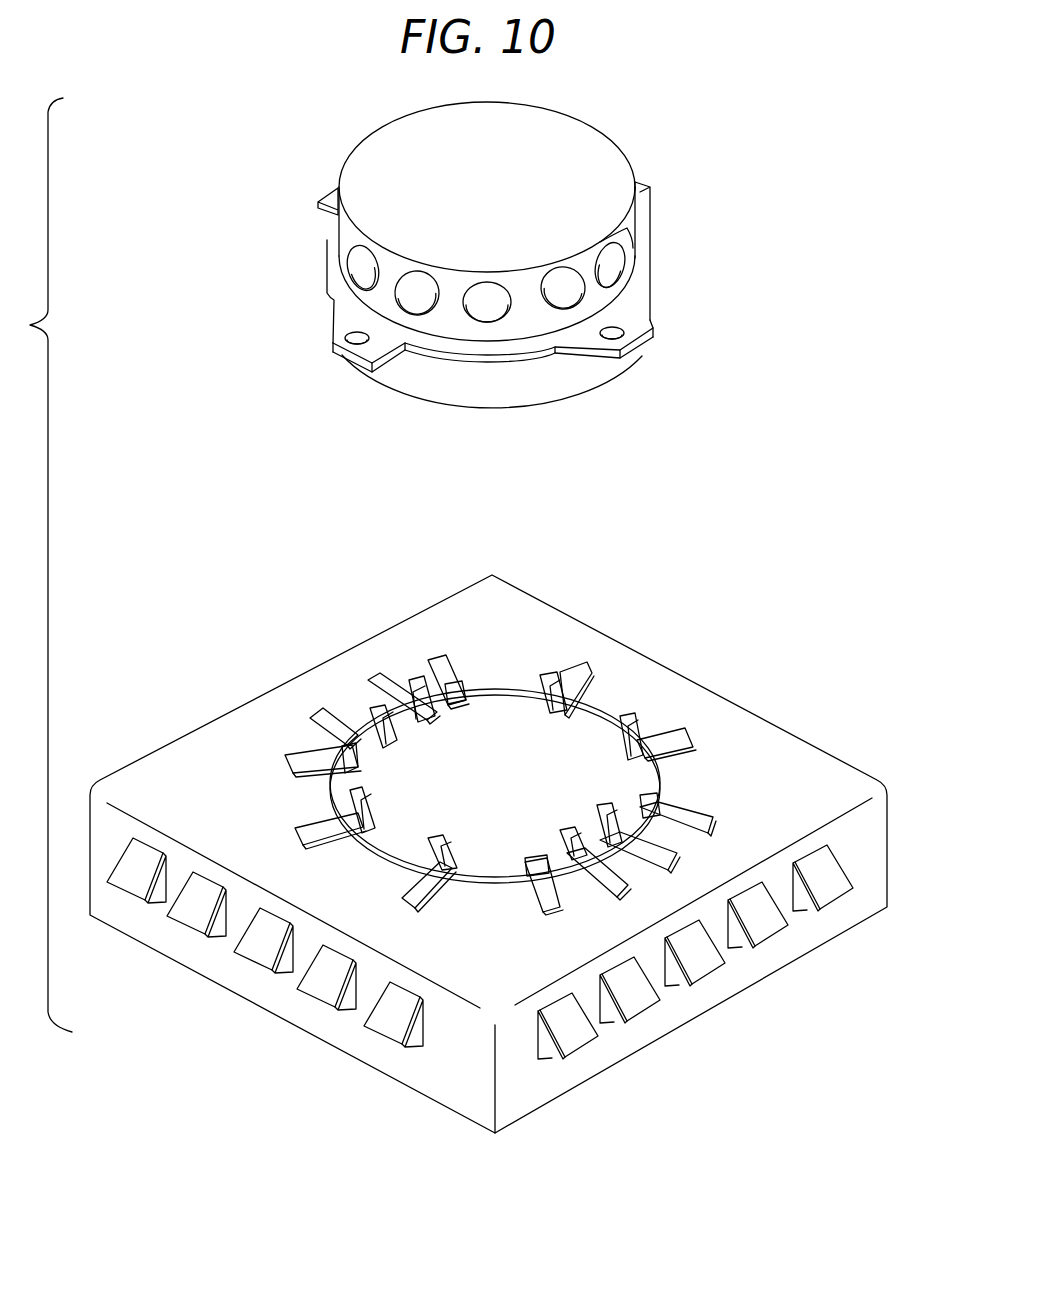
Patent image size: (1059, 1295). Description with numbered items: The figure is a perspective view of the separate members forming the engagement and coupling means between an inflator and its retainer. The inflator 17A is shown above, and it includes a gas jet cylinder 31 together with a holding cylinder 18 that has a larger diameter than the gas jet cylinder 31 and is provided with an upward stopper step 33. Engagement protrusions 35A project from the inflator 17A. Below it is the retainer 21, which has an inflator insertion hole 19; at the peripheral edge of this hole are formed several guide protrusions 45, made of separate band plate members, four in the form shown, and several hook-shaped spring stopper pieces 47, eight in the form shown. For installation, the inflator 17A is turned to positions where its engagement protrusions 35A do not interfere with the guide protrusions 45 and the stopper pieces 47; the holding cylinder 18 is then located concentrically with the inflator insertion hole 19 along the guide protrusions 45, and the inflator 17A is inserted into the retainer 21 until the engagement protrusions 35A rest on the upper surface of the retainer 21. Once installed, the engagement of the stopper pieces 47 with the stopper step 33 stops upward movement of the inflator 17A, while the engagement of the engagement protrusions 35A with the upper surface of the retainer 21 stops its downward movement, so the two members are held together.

The inflator 17A is at (601, 131).
The gas jet cylinder 31 is at (637, 169).
The stopper step 33 is at (635, 272).
The engagement protrusions 35A is at (651, 337).
The holding cylinder 18 is at (594, 381).
The inflator insertion hole 19 is at (524, 689).
The retainer 21 is at (648, 652).
The guide protrusions 45 is at (287, 750).
The spring stopper pieces 47 is at (380, 680).